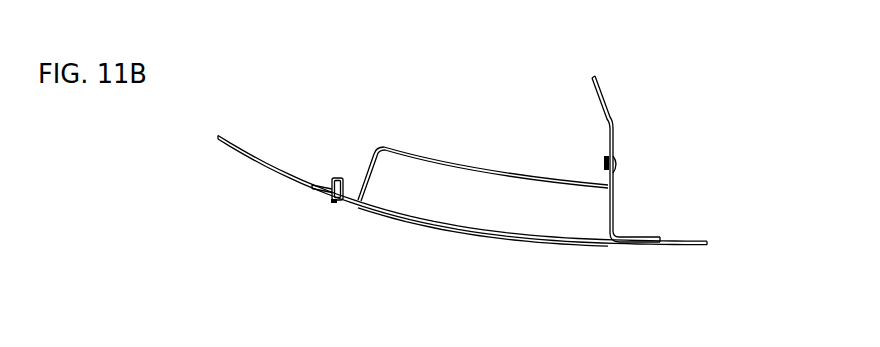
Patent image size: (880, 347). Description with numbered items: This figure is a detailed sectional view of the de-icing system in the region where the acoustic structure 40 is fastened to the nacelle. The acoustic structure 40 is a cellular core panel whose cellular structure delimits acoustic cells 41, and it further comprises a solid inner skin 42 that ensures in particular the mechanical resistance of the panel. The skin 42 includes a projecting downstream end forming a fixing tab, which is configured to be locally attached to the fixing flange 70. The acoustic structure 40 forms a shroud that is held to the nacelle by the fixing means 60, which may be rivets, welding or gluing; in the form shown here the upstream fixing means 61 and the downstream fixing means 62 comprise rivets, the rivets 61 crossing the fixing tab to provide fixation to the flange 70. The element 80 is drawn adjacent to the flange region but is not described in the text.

The acoustic structure 40 is at (429, 140).
The acoustic cells 41 is at (484, 213).
The solid inner skin 42 is at (505, 172).
The fixing means 60 is at (599, 146).
The upstream fixing means 61 is at (618, 163).
The downstream fixing means 62 is at (339, 177).
The fixing flange 70 is at (637, 240).
The bracket 80 is at (607, 103).